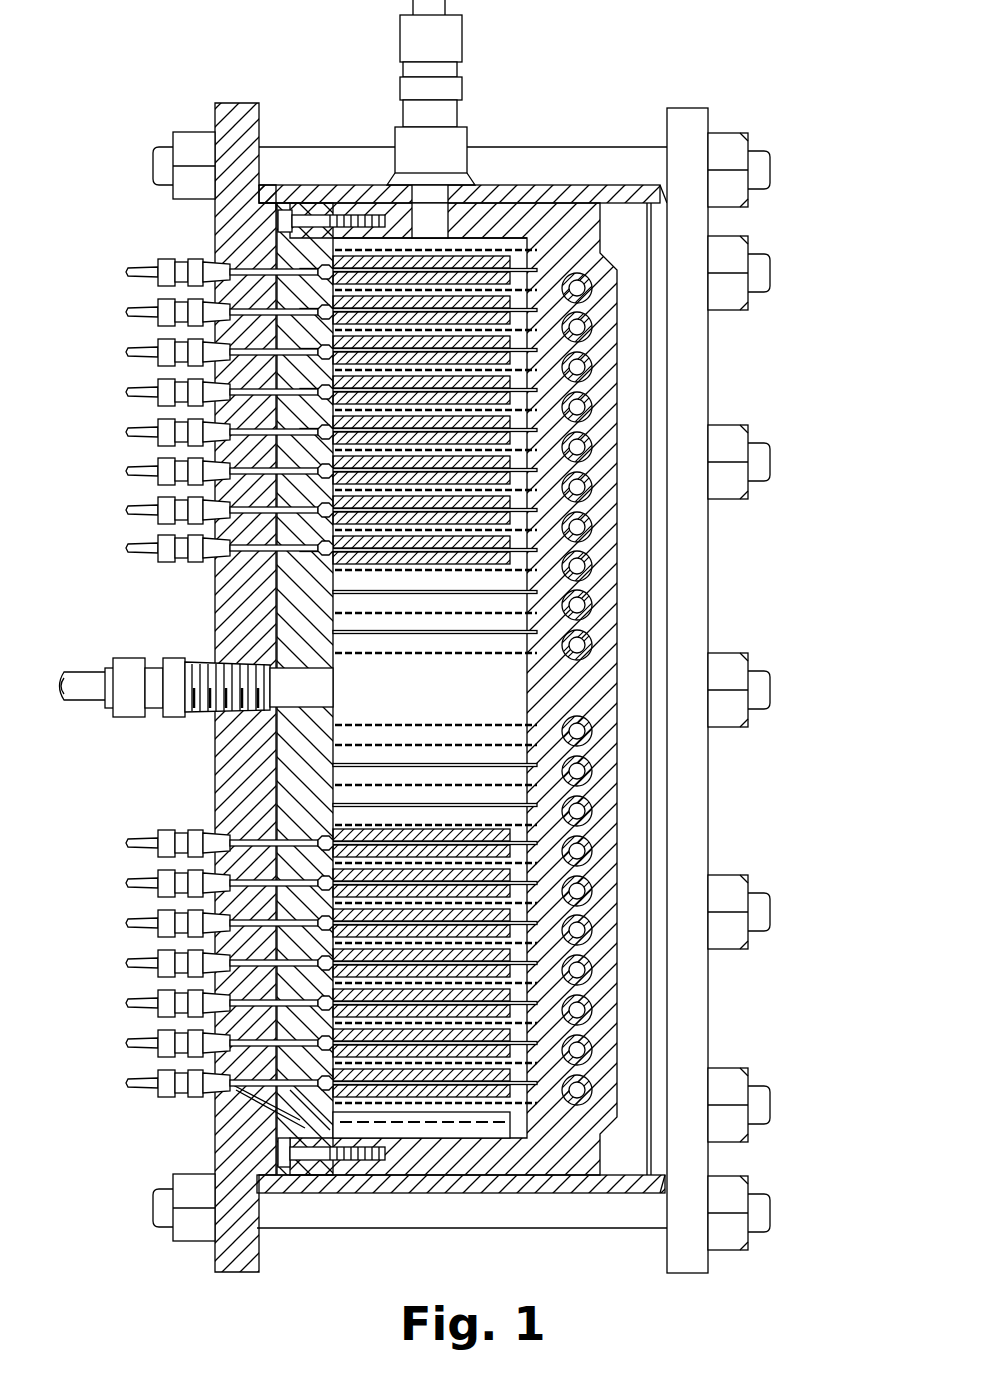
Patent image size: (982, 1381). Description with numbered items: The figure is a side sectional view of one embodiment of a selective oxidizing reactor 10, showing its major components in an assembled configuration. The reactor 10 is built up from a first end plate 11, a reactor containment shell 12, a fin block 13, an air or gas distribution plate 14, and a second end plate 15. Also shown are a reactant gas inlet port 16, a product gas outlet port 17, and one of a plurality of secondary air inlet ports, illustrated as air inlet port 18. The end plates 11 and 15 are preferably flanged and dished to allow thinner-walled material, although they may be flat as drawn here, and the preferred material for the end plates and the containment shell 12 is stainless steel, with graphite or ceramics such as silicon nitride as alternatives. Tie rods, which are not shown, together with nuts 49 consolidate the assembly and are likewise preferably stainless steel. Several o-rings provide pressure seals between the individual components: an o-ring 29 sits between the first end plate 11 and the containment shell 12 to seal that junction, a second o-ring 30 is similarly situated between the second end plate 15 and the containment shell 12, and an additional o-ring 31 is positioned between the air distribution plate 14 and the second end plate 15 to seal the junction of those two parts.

The selective oxidizing reactor 10 is at (742, 588).
The first end plate 11 is at (712, 120).
The reactor containment shell 12 is at (548, 185).
The fin block 13 is at (617, 407).
The air or gas distribution plate 14 is at (292, 744).
The second end plate 15 is at (235, 103).
The reactant gas inlet port 16 is at (77, 677).
The product gas outlet port 17 is at (462, 45).
The secondary air inlet port 18 is at (137, 275).
The o-ring 29 is at (668, 203).
The second o-ring 30 is at (275, 205).
The o-ring 31 is at (278, 200).
The nuts 49 is at (730, 1242).